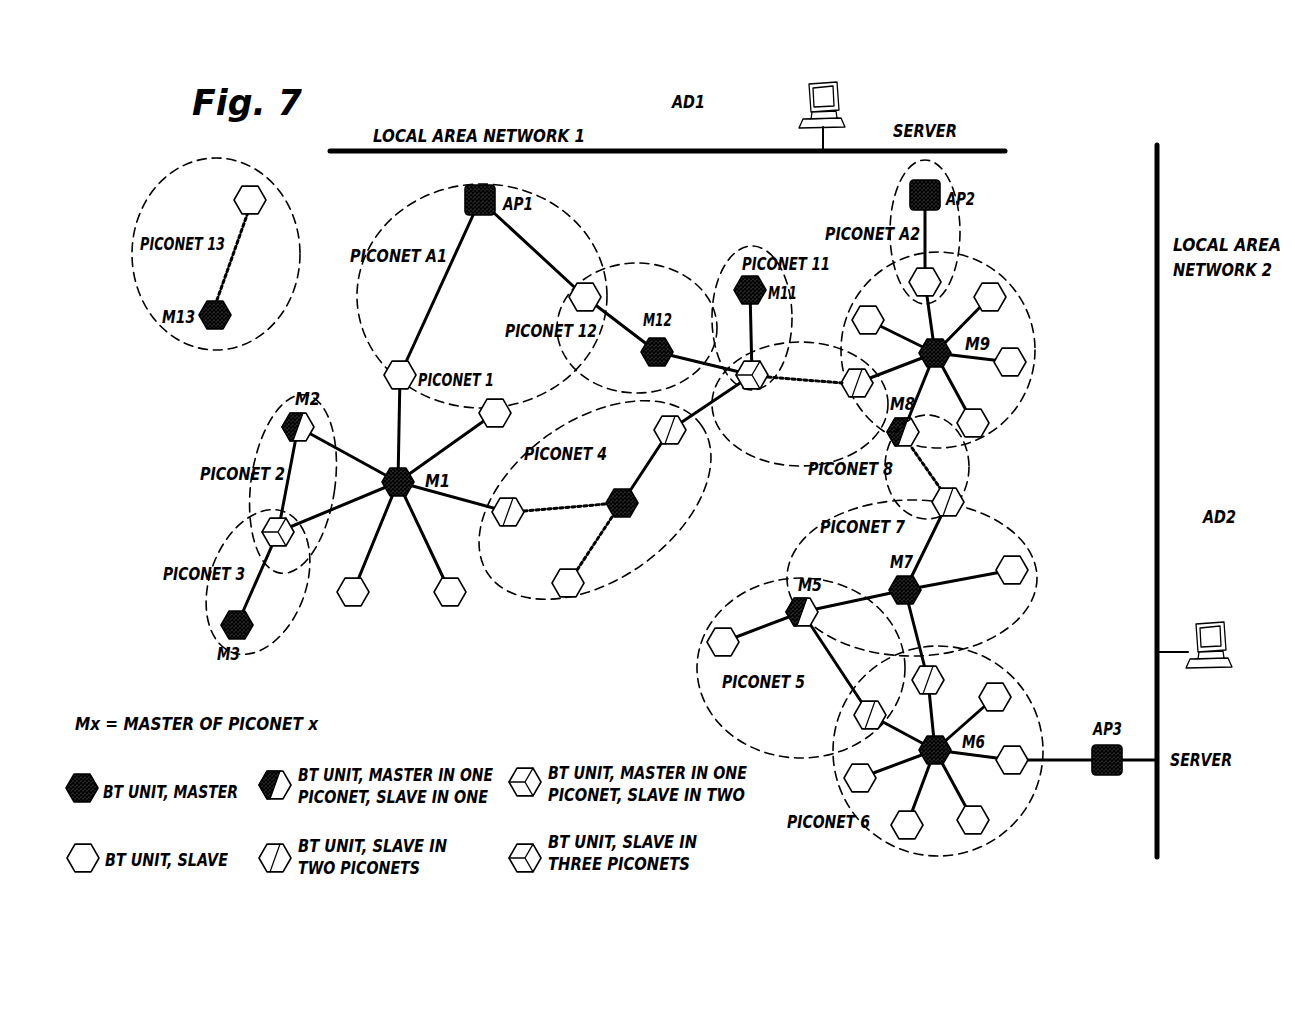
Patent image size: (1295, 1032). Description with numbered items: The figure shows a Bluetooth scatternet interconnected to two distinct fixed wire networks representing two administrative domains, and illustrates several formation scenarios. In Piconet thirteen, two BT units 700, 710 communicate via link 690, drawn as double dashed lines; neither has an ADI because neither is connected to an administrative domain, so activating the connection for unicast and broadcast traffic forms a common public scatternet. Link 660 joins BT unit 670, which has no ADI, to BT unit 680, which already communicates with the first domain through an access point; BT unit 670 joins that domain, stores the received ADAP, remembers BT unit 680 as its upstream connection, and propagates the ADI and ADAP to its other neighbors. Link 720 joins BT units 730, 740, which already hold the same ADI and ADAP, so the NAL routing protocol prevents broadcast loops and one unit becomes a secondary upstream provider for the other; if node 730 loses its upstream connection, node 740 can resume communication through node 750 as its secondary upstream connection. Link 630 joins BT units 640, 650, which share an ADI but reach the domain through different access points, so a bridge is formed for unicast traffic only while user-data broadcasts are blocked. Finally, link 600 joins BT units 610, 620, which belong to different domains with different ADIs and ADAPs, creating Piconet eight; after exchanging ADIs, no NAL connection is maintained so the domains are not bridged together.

The link 600 is at (938, 466).
The BT unit 610 is at (990, 447).
The BT unit 620 is at (966, 500).
The link 630 is at (806, 366).
The BT unit 640 is at (740, 393).
The BT unit 650 is at (842, 390).
The link 660 is at (591, 543).
The BT unit 670 is at (560, 605).
The BT unit 680 is at (632, 521).
The link 690 is at (234, 271).
The BT unit 700 is at (221, 331).
The BT unit 710 is at (267, 202).
The link 720 is at (568, 504).
The BT unit 730 is at (506, 530).
The BT unit 740 is at (612, 490).
The BT unit 750 is at (670, 455).